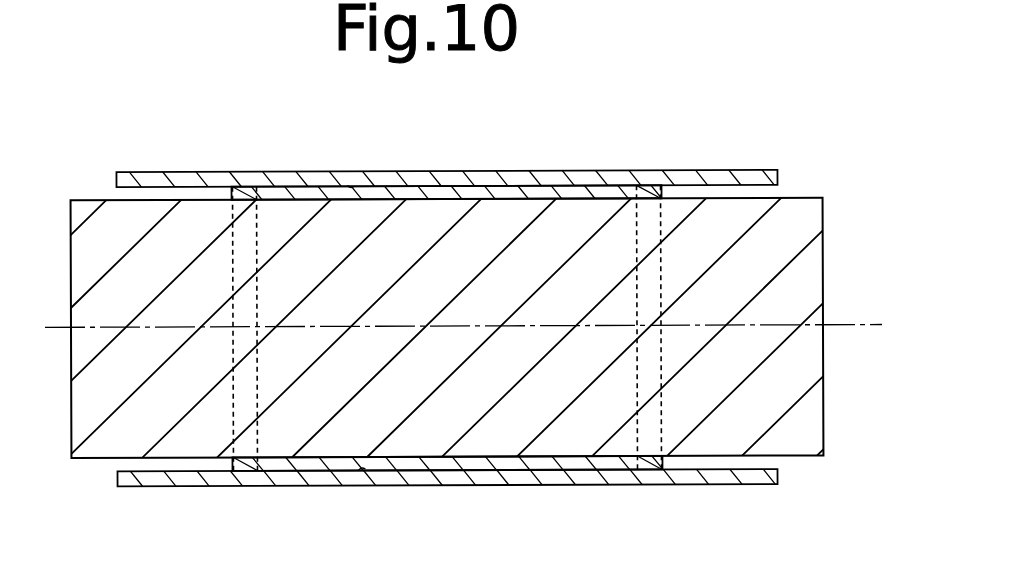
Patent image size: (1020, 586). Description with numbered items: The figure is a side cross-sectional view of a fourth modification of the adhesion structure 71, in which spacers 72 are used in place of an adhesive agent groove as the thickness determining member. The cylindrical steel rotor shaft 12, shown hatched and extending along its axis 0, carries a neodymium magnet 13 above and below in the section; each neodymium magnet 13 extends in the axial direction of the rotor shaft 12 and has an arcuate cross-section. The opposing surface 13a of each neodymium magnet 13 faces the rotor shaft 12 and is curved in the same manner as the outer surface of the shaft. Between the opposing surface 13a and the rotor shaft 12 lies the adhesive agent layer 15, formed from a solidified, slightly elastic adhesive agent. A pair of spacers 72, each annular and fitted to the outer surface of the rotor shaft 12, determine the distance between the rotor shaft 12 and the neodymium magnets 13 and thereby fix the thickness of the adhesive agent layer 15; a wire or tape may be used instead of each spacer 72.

The adhesion structure 71 is at (753, 139).
The rotor shaft 12 is at (73, 283).
The neodymium magnet 13 is at (591, 178).
The opposing surface 13a is at (352, 185).
The adhesive agent layer 15 is at (505, 192).
The spacer 72 is at (243, 188).
The axis 0 is at (847, 326).